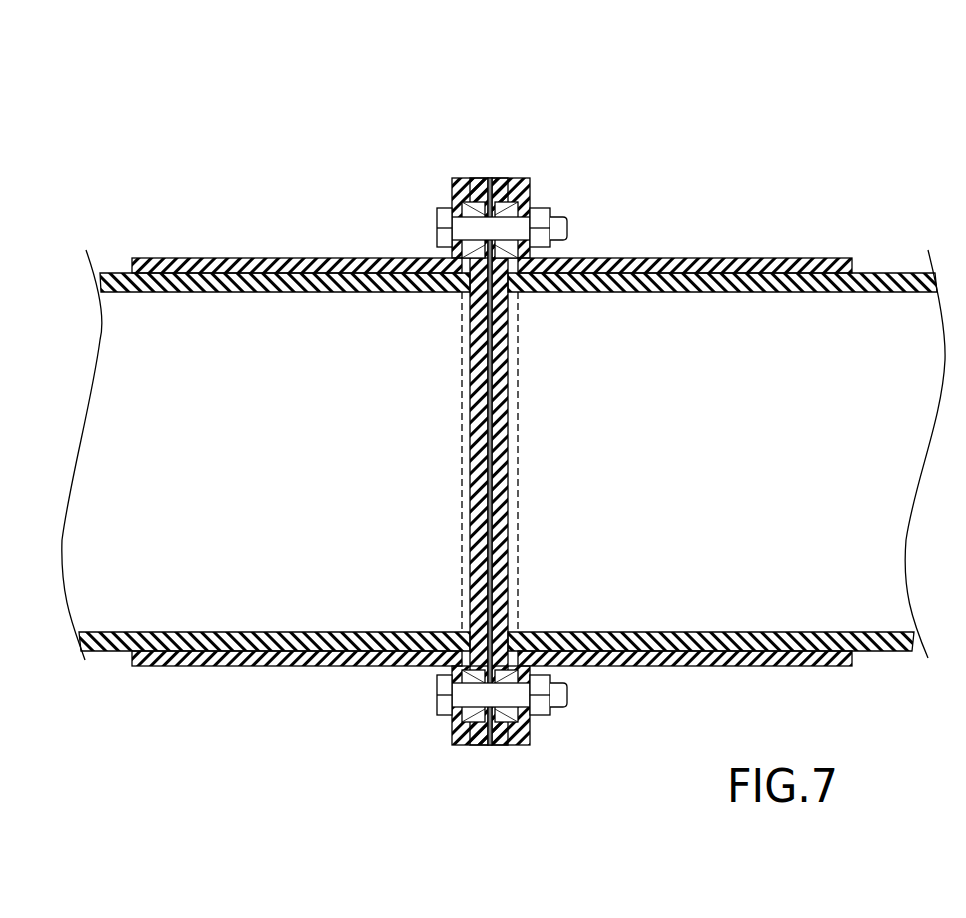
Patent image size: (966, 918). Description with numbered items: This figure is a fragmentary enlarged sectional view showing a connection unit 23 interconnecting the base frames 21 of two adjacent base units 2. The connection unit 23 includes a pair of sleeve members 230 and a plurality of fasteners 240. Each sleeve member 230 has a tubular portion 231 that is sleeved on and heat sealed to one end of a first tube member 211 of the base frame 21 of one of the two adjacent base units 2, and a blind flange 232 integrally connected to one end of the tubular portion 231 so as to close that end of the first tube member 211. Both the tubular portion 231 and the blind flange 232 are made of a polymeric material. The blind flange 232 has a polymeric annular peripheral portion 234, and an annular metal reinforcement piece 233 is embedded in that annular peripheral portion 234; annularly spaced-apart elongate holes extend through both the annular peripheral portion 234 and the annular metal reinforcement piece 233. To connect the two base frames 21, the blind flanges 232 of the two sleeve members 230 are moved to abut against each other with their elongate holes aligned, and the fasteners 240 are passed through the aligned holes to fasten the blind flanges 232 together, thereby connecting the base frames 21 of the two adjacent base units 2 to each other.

The base unit 2 is at (510, 418).
The base frame 21 is at (510, 464).
The first tube member 211 is at (120, 270).
The connection unit 23 is at (491, 403).
The sleeve member 230 is at (492, 401).
The tubular portion 231 is at (253, 257).
The blind flange 232 is at (447, 172).
The annular metal reinforcement piece 233 is at (478, 190).
The annular peripheral portion 234 is at (452, 185).
The fastener 240 is at (437, 235).